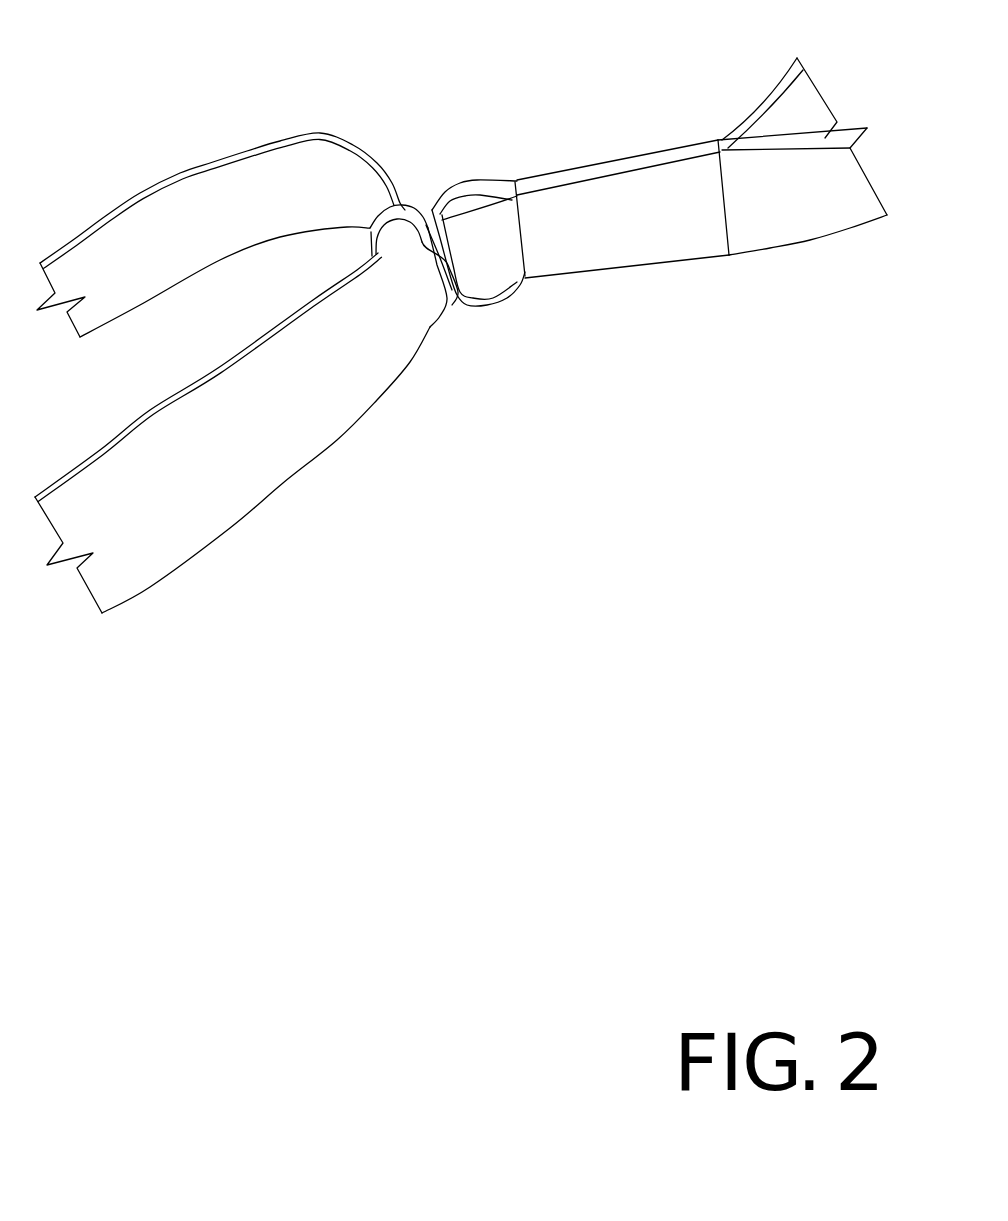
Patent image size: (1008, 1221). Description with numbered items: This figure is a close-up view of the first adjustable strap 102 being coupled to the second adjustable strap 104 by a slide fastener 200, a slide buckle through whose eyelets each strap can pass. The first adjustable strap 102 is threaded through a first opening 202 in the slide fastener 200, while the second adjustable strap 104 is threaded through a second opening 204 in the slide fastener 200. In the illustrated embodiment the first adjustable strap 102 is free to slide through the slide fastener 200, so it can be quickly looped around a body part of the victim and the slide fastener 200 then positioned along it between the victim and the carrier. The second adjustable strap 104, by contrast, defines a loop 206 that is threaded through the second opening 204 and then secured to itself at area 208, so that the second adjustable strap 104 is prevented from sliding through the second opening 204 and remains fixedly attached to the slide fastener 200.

The first adjustable strap 102 is at (238, 433).
The second adjustable strap 104 is at (702, 220).
The slide fastener 200 is at (507, 352).
The first opening 202 is at (452, 374).
The second opening 204 is at (463, 185).
The loop 206 is at (531, 158).
The area 208 is at (653, 261).